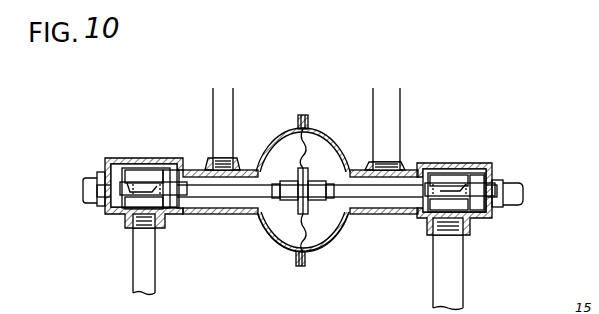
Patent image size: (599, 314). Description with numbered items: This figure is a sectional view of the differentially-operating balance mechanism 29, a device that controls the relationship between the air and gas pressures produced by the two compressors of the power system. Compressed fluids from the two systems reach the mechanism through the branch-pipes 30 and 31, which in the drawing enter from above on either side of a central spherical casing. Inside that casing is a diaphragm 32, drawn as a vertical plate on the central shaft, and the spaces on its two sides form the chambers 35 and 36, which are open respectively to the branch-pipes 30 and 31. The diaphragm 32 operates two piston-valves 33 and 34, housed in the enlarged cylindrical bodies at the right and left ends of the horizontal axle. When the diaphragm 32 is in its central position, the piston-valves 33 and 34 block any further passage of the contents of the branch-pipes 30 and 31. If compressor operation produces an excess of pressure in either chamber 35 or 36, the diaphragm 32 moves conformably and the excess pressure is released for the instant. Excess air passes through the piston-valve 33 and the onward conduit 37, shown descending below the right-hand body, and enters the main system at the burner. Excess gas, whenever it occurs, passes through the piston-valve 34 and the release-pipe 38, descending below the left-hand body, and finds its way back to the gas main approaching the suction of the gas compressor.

The differentially-operating balance mechanism 29 is at (303, 201).
The branch-pipe 30 is at (394, 123).
The branch-pipe 31 is at (213, 110).
The diaphragm 32 is at (310, 158).
The piston-valve 33 is at (463, 178).
The piston-valve 34 is at (124, 177).
The chamber 35 is at (323, 229).
The chamber 36 is at (283, 231).
The onward conduit 37 is at (452, 260).
The release-pipe 38 is at (148, 260).